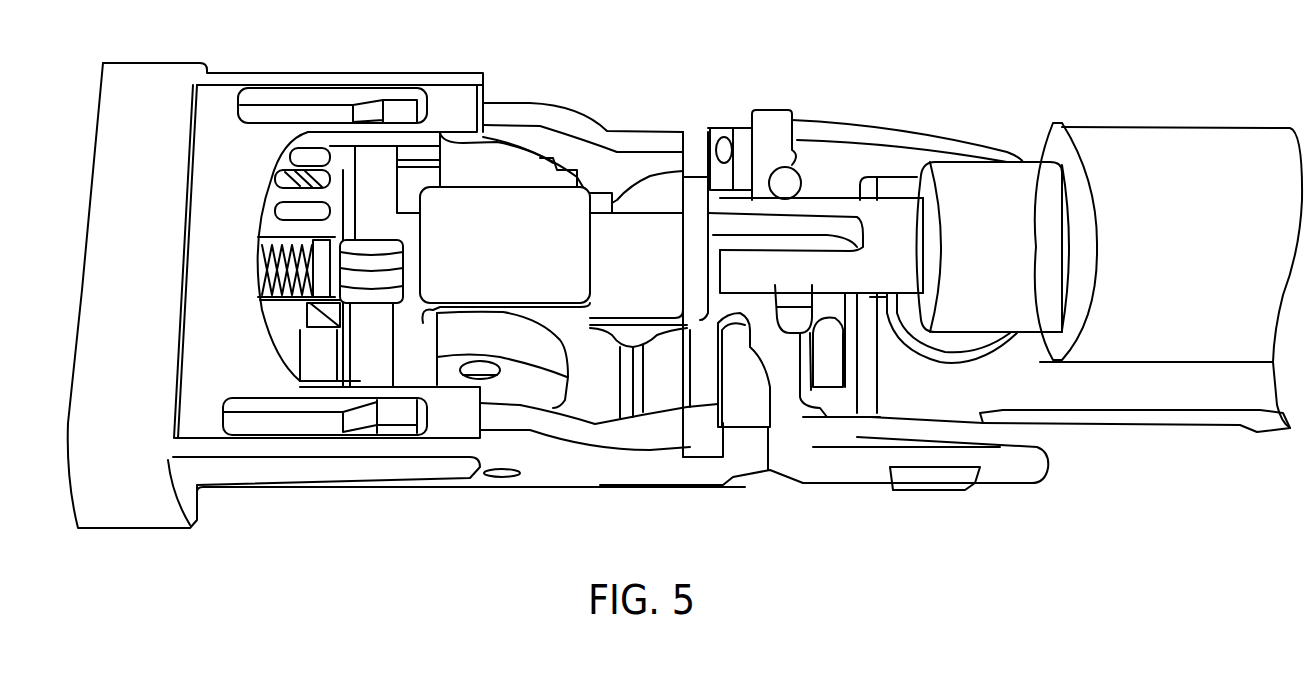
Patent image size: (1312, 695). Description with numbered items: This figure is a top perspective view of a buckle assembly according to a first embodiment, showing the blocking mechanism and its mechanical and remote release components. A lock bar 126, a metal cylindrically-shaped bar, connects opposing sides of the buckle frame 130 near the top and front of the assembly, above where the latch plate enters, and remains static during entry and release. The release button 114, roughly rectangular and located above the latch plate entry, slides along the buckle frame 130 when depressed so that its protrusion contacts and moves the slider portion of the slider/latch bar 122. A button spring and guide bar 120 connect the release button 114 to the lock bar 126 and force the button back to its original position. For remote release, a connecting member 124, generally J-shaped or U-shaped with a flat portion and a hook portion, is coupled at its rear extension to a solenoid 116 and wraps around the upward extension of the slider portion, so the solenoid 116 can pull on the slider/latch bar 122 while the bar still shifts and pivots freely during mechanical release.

The release button 114 is at (110, 194).
The solenoid 116 is at (972, 197).
The button spring and guide bar 120 is at (262, 285).
The slider/latch bar 122 is at (515, 387).
The connecting member 124 is at (638, 240).
The lock bar 126 is at (360, 212).
The buckle frame 130 is at (817, 170).